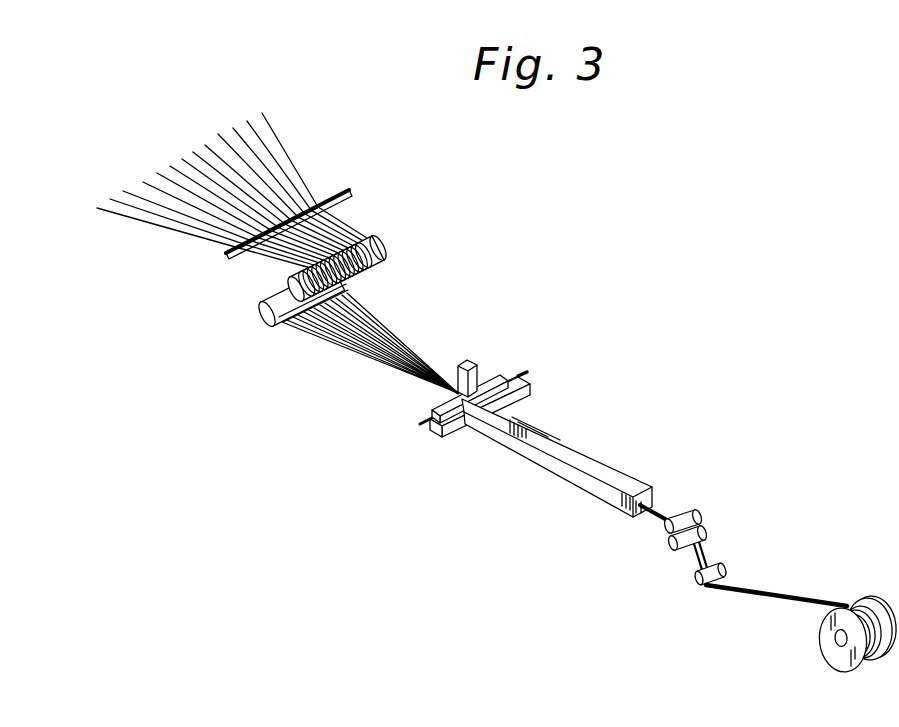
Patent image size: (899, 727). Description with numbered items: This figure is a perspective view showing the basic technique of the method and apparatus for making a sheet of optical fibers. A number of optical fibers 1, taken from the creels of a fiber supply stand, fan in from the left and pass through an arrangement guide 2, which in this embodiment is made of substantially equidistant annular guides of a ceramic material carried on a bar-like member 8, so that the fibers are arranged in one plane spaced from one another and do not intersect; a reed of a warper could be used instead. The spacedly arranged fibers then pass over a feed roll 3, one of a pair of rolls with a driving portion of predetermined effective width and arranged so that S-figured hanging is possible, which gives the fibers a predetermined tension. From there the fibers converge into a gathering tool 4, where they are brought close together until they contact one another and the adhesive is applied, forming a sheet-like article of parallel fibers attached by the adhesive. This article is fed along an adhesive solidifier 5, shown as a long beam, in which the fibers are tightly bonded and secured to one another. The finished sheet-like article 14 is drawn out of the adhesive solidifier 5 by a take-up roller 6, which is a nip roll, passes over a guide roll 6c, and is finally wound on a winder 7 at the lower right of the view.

The optical fibers 1 is at (291, 164).
The arrangement guide 2 is at (317, 200).
The comb bar 8 is at (352, 192).
The feed roll 3 is at (383, 249).
The gathering tool 4 is at (510, 371).
The adhesive solidifier 5 is at (597, 453).
The take-up roller 6 is at (660, 538).
The guide roll 6c is at (702, 590).
The sheet-like article 14 is at (762, 589).
The winder 7 is at (822, 638).